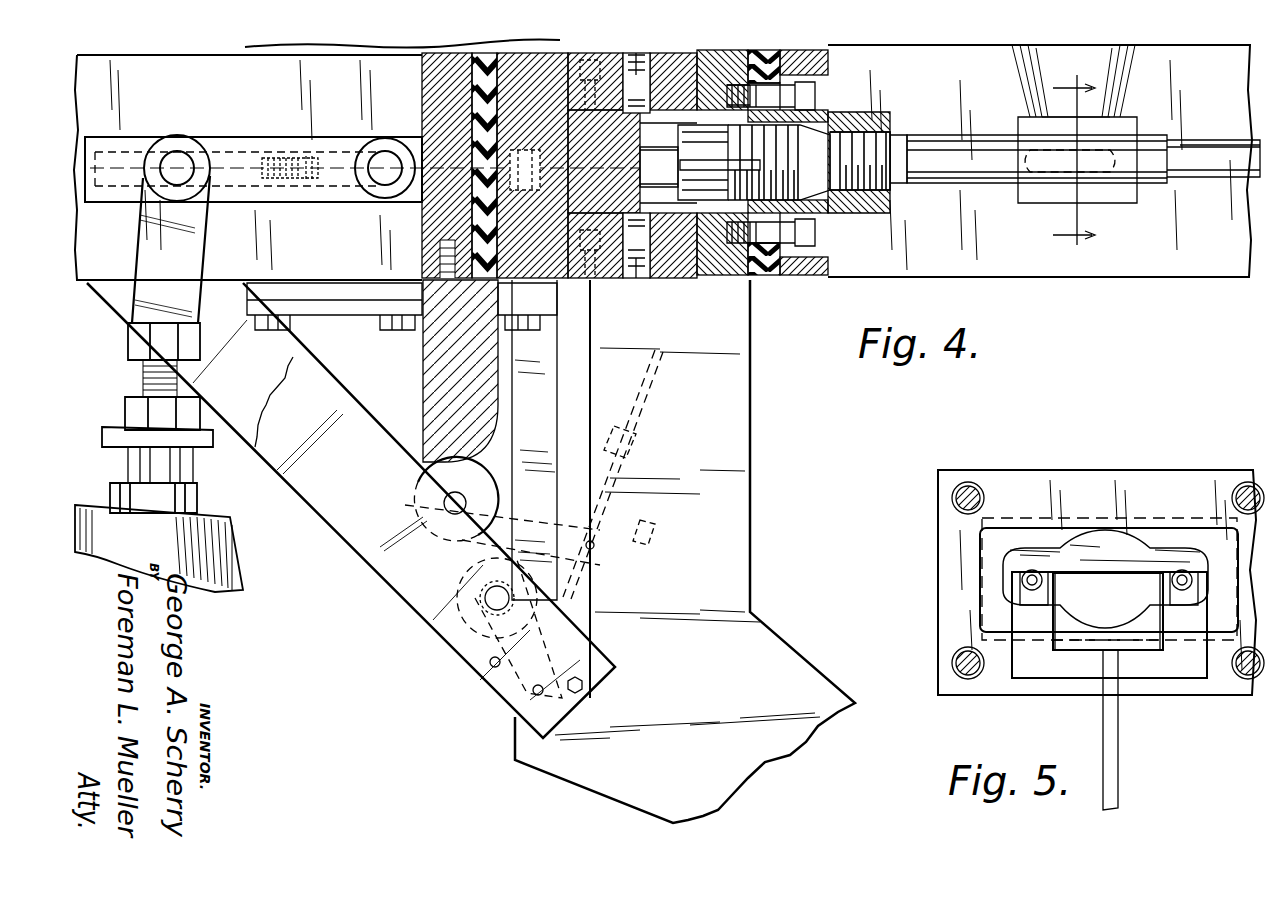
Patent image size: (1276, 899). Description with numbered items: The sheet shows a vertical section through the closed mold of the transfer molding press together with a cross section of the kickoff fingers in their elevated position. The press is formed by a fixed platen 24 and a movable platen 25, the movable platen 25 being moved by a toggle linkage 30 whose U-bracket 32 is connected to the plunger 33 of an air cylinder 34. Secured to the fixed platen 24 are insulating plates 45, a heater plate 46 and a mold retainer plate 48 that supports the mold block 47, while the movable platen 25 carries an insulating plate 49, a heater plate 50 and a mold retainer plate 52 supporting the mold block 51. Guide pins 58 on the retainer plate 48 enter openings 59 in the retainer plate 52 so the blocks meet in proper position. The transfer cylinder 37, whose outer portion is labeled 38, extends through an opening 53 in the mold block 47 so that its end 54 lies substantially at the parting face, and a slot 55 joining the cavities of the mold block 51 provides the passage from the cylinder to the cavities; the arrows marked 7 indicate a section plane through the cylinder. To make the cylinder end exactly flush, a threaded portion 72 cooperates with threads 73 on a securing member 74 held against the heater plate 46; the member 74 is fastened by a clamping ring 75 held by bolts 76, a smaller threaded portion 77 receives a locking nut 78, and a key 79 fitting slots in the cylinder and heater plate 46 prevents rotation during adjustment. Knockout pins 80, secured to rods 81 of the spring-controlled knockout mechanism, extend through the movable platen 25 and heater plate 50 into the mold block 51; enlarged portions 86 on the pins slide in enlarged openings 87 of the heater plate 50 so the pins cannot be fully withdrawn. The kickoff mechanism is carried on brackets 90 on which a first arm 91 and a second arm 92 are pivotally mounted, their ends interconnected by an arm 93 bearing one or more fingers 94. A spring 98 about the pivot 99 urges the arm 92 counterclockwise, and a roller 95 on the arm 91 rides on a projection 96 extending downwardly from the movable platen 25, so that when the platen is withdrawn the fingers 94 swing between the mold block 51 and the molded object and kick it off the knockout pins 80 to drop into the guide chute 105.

In FIG. 4, the section line 7- 7 is at (1078, 162).
In FIG. 4, the fixed platen 24 is at (815, 52).
In FIG. 4, the movable platen 25 is at (425, 236).
In FIG. 4, the toggle linkage 30 is at (216, 126).
In FIG. 4, the U-bracket 32 is at (195, 248).
In FIG. 4, the plunger 33 is at (195, 497).
In FIG. 4, the air cylinder 34 is at (245, 578).
In FIG. 4, the transfer cylinder 37 is at (1004, 185).
In FIG. 4, the shaft end 38 is at (1205, 140).
In FIG. 4, the insulating plates 45 is at (755, 52).
In FIG. 4, the heater plate 46 is at (722, 162).
In FIG. 4, the mold block 47 is at (722, 278).
In FIG. 4, the mold retainer plate 48 is at (680, 280).
In FIG. 4, the insulating plate 49 is at (422, 72).
In FIG. 4, the heater plate 50 is at (532, 165).
In FIG. 4, the mold block 51 is at (538, 246).
In FIG. 5, the mold block 51 is at (1030, 530).
In FIG. 4, the mold retainer plate 52 is at (605, 282).
In FIG. 4, the opening 53 is at (645, 125).
In FIG. 4, the end 54 is at (611, 190).
In FIG. 5, the slot 55 is at (1107, 572).
In FIG. 4, the guide pins 58 is at (638, 53).
In FIG. 4, the openings 59 is at (585, 58).
In FIG. 4, the threaded portion 72 is at (812, 136).
In FIG. 4, the threads 73 is at (848, 215).
In FIG. 4, the securing member 74 is at (825, 233).
In FIG. 4, the clamping ring 75 is at (760, 90).
In FIG. 4, the bolts 76 is at (805, 97).
In FIG. 4, the threaded portion 77 is at (890, 138).
In FIG. 4, the nut 78 is at (890, 208).
In FIG. 4, the key 79 is at (695, 165).
In FIG. 4, the knockout pins 80 is at (632, 165).
In FIG. 4, the rods 81 is at (250, 165).
In FIG. 4, the enlarged portions 86 is at (522, 150).
In FIG. 4, the enlarged openings 87 is at (524, 190).
In FIG. 4, the brackets 90 is at (398, 588).
In FIG. 4, the first arm 91 is at (534, 505).
In FIG. 4, the second arm 92 is at (512, 690).
In FIG. 4, the arm 93 is at (615, 490).
In FIG. 5, the arm 93 is at (1118, 746).
In FIG. 4, the fingers 94 is at (648, 388).
In FIG. 5, the fingers 94 is at (1020, 622).
In FIG. 4, the roller 95 is at (461, 468).
In FIG. 4, the projection 96 is at (422, 375).
In FIG. 4, the spring 98 is at (466, 578).
In FIG. 4, the pivot 99 is at (485, 603).
In FIG. 4, the guide chute 105 is at (748, 487).